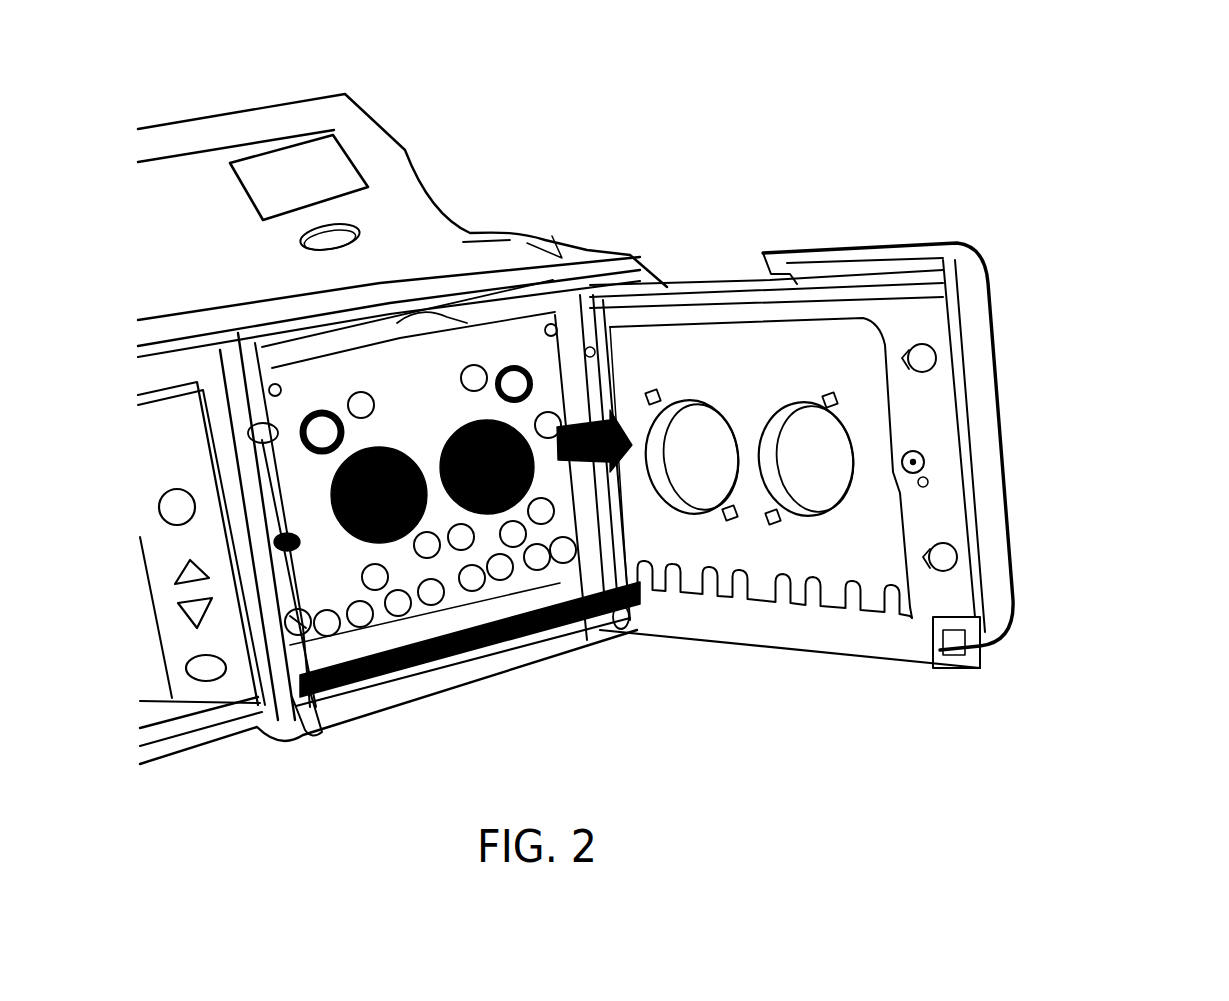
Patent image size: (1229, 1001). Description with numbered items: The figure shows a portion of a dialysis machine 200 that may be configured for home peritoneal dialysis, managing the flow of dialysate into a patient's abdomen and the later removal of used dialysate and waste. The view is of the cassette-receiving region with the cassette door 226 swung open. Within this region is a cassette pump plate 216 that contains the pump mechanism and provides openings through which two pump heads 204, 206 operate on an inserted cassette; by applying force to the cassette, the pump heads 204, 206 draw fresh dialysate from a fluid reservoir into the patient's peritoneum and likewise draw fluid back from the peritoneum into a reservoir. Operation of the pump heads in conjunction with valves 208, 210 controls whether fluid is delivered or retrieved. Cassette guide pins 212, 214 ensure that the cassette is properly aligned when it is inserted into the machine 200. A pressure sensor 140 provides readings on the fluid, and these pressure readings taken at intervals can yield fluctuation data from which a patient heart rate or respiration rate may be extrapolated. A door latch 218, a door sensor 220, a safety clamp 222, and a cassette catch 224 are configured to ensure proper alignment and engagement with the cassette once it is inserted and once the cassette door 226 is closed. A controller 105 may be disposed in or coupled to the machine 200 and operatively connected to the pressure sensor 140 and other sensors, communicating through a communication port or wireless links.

The controller 105 is at (333, 135).
The pressure sensor 140 is at (323, 440).
The dialysis machine 200 is at (1088, 154).
The pump head 204 is at (436, 522).
The pump head 206 is at (532, 500).
The valve 208 is at (376, 578).
The valve 210 is at (432, 596).
The cassette guide pin 212 is at (278, 387).
The cassette guide pin 214 is at (551, 330).
The cassette pump plate 216 is at (553, 392).
The door latch 218 is at (917, 245).
The door sensor 220 is at (280, 537).
The safety clamp 222 is at (327, 713).
The cassette catch 224 is at (510, 653).
The cassette door 226 is at (988, 565).